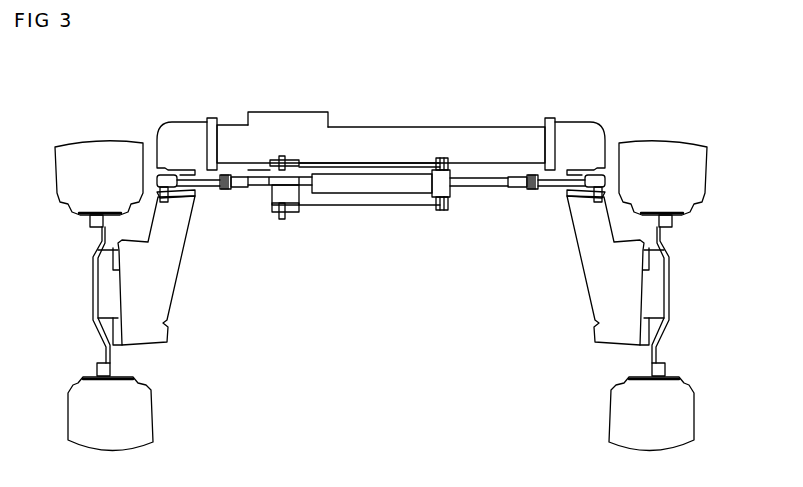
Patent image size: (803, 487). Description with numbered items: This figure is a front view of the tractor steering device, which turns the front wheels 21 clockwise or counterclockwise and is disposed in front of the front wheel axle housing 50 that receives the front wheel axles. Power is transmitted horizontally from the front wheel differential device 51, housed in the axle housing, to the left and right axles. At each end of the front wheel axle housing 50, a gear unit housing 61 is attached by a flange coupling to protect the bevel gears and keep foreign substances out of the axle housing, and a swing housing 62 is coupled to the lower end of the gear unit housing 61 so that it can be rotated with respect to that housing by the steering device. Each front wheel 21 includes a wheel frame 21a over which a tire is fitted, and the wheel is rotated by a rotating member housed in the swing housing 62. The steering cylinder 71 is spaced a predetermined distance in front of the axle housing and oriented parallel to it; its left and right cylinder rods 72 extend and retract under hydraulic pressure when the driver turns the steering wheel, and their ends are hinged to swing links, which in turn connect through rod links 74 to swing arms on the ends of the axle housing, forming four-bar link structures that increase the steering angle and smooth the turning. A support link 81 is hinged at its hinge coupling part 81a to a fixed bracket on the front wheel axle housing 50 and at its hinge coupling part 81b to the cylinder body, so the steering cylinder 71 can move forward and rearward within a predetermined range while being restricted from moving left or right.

The front wheel 21 is at (97, 153).
The wheel frame 21a is at (93, 259).
The front wheel axle housing 50 is at (400, 130).
The front wheel differential device 51 is at (295, 118).
The gear unit housing 61 is at (188, 128).
The swing housing 62 is at (165, 268).
The steering cylinder 71 is at (372, 178).
The cylinder rod 72 is at (478, 185).
The rod link 74 is at (200, 190).
The support link 81 is at (333, 205).
The hinge coupling part 81a is at (278, 212).
The hinge coupling part 81b is at (443, 203).